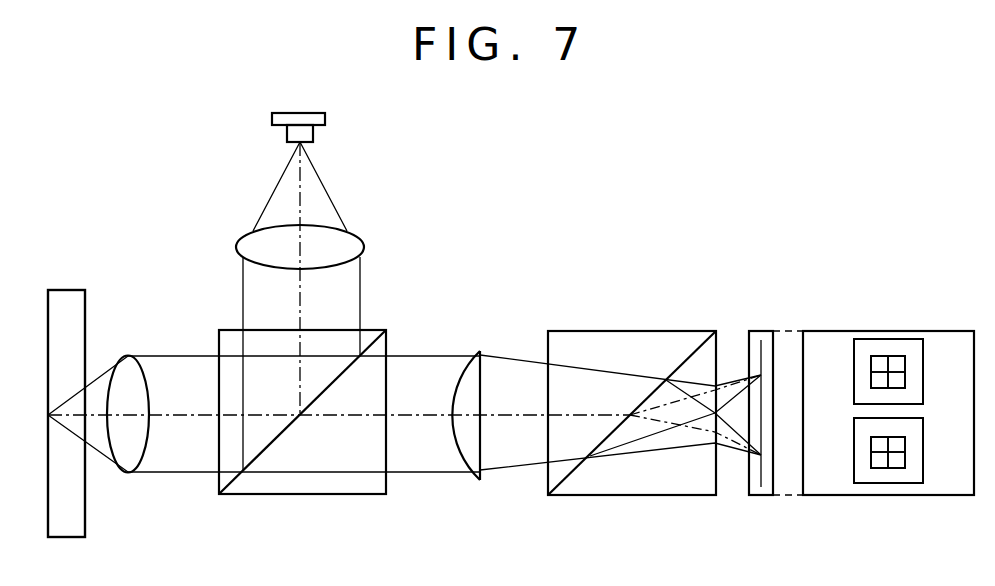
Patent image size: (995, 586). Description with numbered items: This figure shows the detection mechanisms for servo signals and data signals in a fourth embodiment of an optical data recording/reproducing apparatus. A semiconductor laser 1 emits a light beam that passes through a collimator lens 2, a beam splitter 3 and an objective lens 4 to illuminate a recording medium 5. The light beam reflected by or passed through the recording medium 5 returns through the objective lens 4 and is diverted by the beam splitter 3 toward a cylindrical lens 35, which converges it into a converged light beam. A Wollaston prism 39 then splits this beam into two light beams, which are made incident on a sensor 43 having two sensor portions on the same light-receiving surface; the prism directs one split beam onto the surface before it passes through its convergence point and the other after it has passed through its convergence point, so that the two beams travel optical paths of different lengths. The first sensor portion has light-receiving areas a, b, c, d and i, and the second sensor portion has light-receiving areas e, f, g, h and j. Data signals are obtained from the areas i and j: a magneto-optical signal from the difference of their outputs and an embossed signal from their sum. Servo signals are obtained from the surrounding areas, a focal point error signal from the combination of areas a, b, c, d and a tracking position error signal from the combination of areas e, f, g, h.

The semiconductor laser 1 is at (296, 170).
The collimator lens 2 is at (287, 347).
The beam splitter 3 is at (302, 432).
The objective lens 4 is at (264, 397).
The recording medium 5 is at (66, 392).
The cylindrical lens 35 is at (606, 435).
The Wollaston prism 39 is at (632, 437).
The sensor 43 is at (774, 437).
The light-receiving area a is at (897, 358).
The light-receiving area b is at (898, 381).
The light-receiving area c is at (878, 380).
The light-receiving area d is at (879, 361).
The light-receiving area e is at (898, 444).
The light-receiving area f is at (897, 467).
The light-receiving area g is at (878, 467).
The light-receiving area h is at (878, 444).
The light-receiving area i is at (888, 371).
The light-receiving area j is at (888, 450).